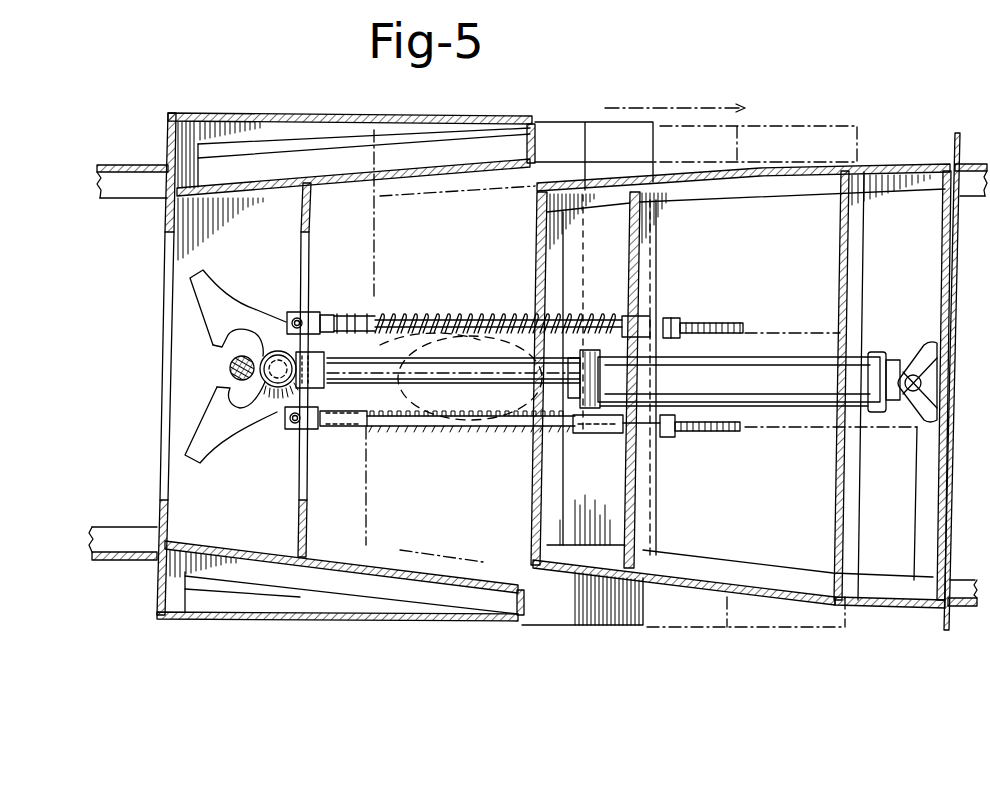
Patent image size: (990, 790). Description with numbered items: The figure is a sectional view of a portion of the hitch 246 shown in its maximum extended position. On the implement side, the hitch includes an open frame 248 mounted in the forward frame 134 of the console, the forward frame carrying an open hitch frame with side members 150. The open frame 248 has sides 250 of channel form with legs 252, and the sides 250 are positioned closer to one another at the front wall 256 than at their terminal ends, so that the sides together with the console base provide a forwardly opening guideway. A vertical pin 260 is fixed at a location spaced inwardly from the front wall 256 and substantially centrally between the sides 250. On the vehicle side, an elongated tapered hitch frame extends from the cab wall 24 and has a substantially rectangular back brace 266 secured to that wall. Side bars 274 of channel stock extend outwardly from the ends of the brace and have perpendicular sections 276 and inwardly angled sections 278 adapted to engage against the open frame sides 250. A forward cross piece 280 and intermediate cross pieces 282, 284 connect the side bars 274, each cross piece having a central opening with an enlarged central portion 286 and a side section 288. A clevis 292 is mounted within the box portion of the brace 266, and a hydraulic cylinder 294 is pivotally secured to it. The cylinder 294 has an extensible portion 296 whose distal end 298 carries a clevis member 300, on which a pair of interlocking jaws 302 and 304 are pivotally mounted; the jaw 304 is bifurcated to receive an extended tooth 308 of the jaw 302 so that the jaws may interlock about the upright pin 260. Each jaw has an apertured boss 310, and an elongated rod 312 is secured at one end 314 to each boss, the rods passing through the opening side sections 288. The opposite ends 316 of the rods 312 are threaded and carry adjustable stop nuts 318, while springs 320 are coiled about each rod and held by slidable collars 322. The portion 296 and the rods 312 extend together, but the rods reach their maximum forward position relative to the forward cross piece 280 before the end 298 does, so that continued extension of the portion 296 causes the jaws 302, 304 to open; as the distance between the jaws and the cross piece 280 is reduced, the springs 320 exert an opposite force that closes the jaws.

The cab wall 24 is at (956, 470).
The forward frame 134 is at (220, 620).
The side members 150 is at (355, 620).
The hitch 246 is at (522, 106).
The open frame 248 is at (540, 176).
The sides 250 is at (404, 185).
The legs 252 is at (318, 160).
The front wall 256 is at (165, 220).
The vertical pin 260 is at (232, 372).
The back brace 266 is at (944, 274).
The side bars 274 is at (773, 602).
The perpendicular sections 276 is at (898, 165).
The inwardly angled sections 278 is at (683, 620).
The forward cross piece 280 is at (534, 510).
The intermediate cross piece 282 is at (642, 486).
The intermediate cross piece 284 is at (845, 510).
The enlarged central portion 286 is at (840, 410).
The side section 288 is at (843, 450).
The clevis 292 is at (902, 430).
The hydraulic cylinder 294 is at (756, 391).
The extensible portion 296 is at (455, 375).
The distal end 298 is at (350, 316).
The clevis member 300 is at (268, 412).
The jaw 302 is at (205, 465).
The jaw 304 is at (212, 325).
The extended tooth 308 is at (216, 391).
The apertured boss 310 is at (290, 318).
The elongated rod 312 is at (420, 432).
The end 314 is at (306, 430).
The opposite ends 316 is at (730, 432).
The stop nuts 318 is at (668, 437).
The springs 320 is at (400, 315).
The slidable collars 322 is at (665, 325).